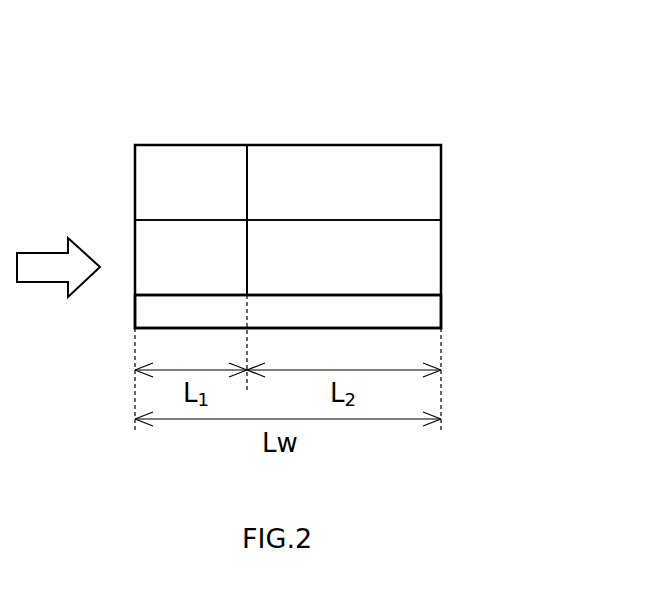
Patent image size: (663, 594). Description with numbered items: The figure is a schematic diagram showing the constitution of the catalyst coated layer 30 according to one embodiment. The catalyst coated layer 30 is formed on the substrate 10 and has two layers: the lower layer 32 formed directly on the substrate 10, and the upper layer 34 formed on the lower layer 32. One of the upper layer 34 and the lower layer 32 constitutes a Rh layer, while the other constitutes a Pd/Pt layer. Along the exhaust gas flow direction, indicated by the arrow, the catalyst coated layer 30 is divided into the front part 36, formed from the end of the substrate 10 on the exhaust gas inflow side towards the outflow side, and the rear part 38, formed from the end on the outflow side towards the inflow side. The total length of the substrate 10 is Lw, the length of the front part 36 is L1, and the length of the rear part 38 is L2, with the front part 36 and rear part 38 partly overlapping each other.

The substrate 10 is at (427, 315).
The catalyst coated layer 30 is at (413, 95).
The lower layer 32 is at (442, 252).
The upper layer 34 is at (442, 190).
The front part 36 is at (190, 142).
The rear part 38 is at (312, 142).